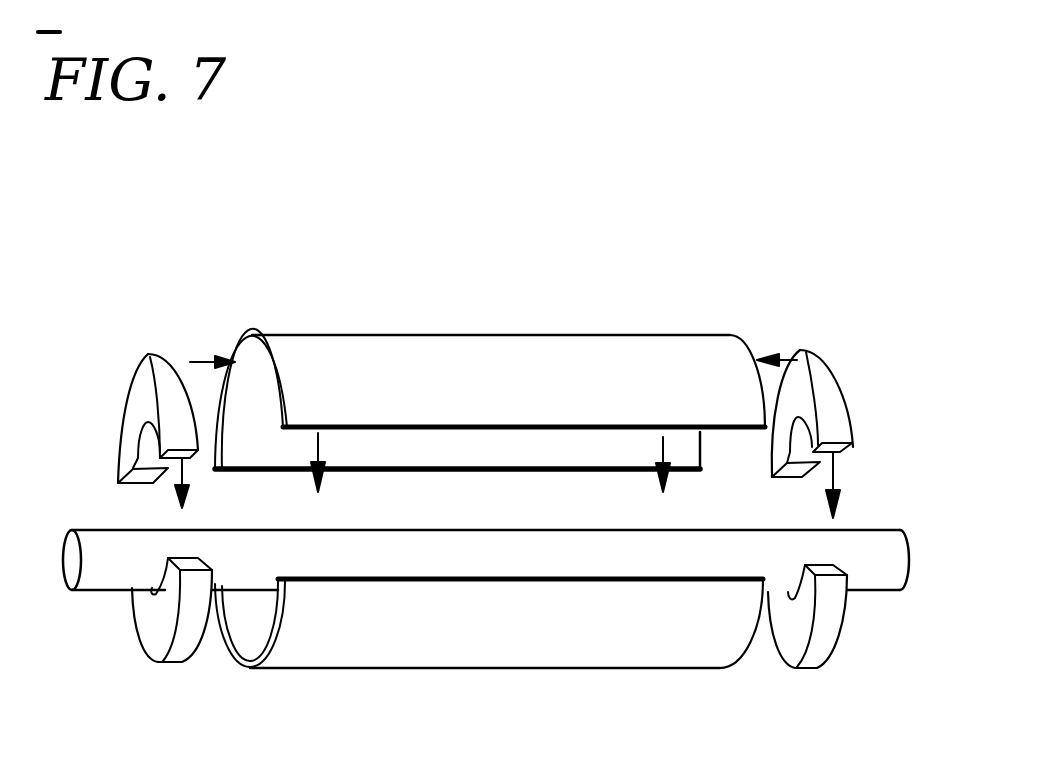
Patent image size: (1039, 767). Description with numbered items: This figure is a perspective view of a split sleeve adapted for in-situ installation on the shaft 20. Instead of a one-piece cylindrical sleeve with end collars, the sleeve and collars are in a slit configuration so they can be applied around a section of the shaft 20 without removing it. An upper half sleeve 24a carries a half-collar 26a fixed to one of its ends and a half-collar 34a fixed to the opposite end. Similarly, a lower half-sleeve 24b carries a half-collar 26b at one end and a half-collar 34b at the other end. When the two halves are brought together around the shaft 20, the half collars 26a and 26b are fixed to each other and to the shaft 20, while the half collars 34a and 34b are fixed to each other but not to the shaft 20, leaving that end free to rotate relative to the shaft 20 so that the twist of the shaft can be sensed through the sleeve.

The shaft 20 is at (508, 570).
The half sleeve 24a is at (518, 405).
The half-sleeve 24b is at (518, 640).
The half-collar 26a is at (158, 358).
The half-collar 26b is at (172, 663).
The half-collar 34a is at (810, 350).
The half-collar 34b is at (808, 668).